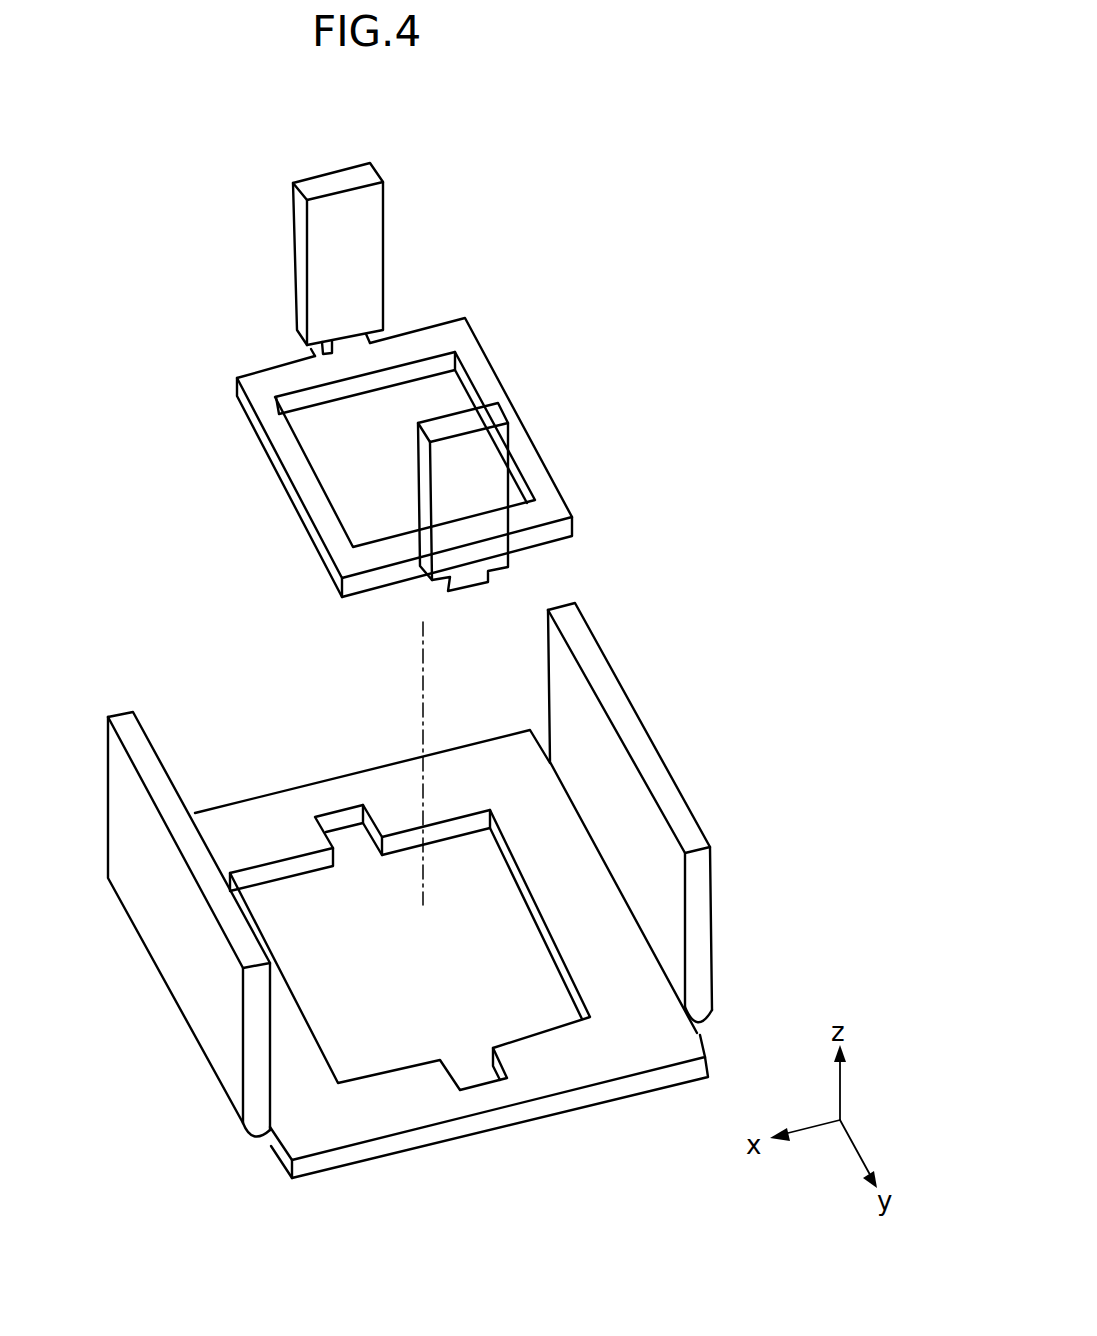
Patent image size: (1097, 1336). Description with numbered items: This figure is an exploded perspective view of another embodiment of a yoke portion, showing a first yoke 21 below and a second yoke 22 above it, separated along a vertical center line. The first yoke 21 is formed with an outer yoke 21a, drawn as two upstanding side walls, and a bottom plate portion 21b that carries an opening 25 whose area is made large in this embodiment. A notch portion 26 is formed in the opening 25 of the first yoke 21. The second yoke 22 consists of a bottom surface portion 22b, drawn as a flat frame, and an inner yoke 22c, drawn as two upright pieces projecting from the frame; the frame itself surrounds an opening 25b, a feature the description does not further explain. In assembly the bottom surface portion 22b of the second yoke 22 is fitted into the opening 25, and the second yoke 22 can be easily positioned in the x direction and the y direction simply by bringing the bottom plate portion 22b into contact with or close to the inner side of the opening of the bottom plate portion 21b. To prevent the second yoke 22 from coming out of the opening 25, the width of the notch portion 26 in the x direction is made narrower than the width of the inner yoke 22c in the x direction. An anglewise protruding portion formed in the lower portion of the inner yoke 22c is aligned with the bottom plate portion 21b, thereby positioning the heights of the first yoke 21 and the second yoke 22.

The first yoke 21 is at (738, 900).
The outer yoke 21a is at (170, 955).
The bottom plate portion 21b is at (607, 1058).
The second yoke 22 is at (520, 334).
The bottom surface portion 22b is at (282, 380).
The inner yoke 22c is at (345, 215).
The opening 25 is at (295, 902).
The opening of frame portion 25b is at (348, 473).
The notch portion 26 is at (468, 1070).